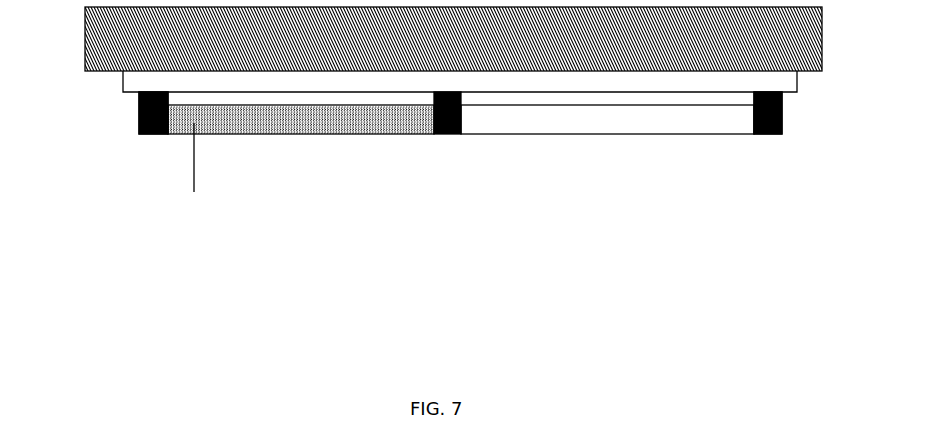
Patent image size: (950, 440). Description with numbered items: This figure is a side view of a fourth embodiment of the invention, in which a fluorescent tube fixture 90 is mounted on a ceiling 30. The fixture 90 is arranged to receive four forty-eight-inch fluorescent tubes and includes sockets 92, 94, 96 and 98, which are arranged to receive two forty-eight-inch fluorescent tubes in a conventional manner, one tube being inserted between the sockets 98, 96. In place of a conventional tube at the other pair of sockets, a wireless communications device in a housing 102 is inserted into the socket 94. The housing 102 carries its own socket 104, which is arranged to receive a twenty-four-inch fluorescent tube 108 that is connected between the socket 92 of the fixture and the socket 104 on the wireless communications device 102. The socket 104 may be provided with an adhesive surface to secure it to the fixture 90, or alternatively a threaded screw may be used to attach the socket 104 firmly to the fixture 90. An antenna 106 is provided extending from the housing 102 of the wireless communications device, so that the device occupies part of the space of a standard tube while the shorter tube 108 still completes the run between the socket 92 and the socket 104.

The ceiling 30 is at (100, 72).
The fluorescent tube fixture 90 is at (124, 76).
The socket 94 is at (138, 113).
The socket 98 is at (153, 113).
The wireless communications device housing 102 is at (312, 135).
The socket 104 is at (445, 135).
The antenna 106 is at (192, 182).
The fluorescent tube 108 is at (602, 135).
The socket 92 is at (782, 113).
The socket 96 is at (768, 113).